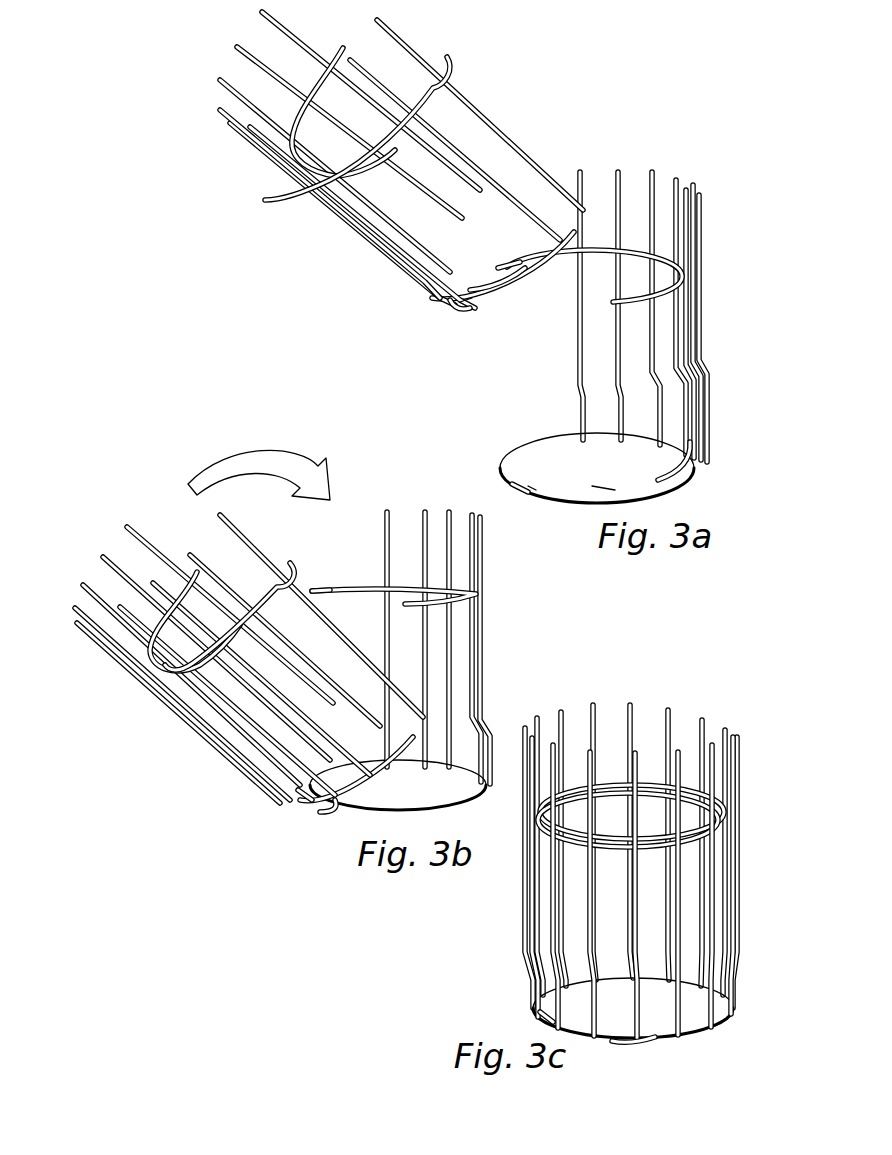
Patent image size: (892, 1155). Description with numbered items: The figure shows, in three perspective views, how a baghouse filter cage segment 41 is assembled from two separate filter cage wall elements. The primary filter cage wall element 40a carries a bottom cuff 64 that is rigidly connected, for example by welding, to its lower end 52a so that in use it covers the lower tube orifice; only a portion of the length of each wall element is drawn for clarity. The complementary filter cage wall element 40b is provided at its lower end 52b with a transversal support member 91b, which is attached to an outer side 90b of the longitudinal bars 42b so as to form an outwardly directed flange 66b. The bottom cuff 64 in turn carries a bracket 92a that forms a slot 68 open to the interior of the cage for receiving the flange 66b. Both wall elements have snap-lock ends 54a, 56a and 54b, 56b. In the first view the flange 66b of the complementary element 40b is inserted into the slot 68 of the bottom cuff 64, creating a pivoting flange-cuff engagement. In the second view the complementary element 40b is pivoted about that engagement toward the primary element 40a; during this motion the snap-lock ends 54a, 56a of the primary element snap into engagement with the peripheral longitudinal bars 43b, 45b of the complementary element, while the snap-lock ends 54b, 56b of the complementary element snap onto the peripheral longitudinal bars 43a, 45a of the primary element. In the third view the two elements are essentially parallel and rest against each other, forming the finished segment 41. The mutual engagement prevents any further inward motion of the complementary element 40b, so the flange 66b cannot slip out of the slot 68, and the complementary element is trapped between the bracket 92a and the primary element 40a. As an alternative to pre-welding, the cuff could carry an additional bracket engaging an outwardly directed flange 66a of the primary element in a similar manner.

In FIG. 3A, the primary filter cage wall element 40a is at (722, 268).
In FIG. 3B, the primary filter cage wall element 40a is at (520, 643).
In FIG. 3C, the primary filter cage wall element 40a is at (760, 806).
In FIG. 3A, the complementary filter cage wall element 40b is at (268, 264).
In FIG. 3B, the complementary filter cage wall element 40b is at (163, 745).
In FIG. 3C, the complementary filter cage wall element 40b is at (500, 884).
In FIG. 3C, the baghouse filter cage segment 41 is at (680, 675).
In FIG. 3A, the longitudinal bars 42b is at (292, 180).
In FIG. 3B, the peripheral longitudinal bar 43a is at (470, 765).
In FIG. 3B, the peripheral longitudinal bar 43b is at (127, 530).
In FIG. 3B, the peripheral longitudinal bar 45a is at (380, 516).
In FIG. 3B, the peripheral longitudinal bar 45b is at (370, 655).
In FIG. 3A, the lower end of primary filter cage wall element 52a is at (688, 490).
In FIG. 3A, the lower end of complementary filter cage wall element 52b is at (492, 306).
In FIG. 3A, the snap-lock end 54a is at (640, 311).
In FIG. 3B, the snap-lock end 54a is at (410, 588).
In FIG. 3A, the snap-lock end 54b is at (330, 40).
In FIG. 3B, the snap-lock end 54b is at (186, 561).
In FIG. 3A, the snap-lock end 56a is at (506, 257).
In FIG. 3B, the snap-lock end 56a is at (320, 579).
In FIG. 3A, the snap-lock end 56b is at (462, 72).
In FIG. 3B, the snap-lock end 56b is at (280, 550).
In FIG. 3A, the bottom cuff 64 is at (605, 480).
In FIG. 3A, the outwardly directed flange 66a is at (672, 462).
In FIG. 3A, the outwardly directed flange 66b is at (455, 300).
In FIG. 3B, the outwardly directed flange 66b is at (338, 806).
In FIG. 3C, the outwardly directed flange 66b is at (622, 1043).
In FIG. 3A, the slot 68 is at (540, 490).
In FIG. 3B, the slot 68 is at (302, 800).
In FIG. 3C, the slot 68 is at (545, 1016).
In FIG. 3A, the outer side of longitudinal bars 90b is at (505, 304).
In FIG. 3A, the transversal support member 91b is at (463, 305).
In FIG. 3A, the bracket 92a is at (535, 487).